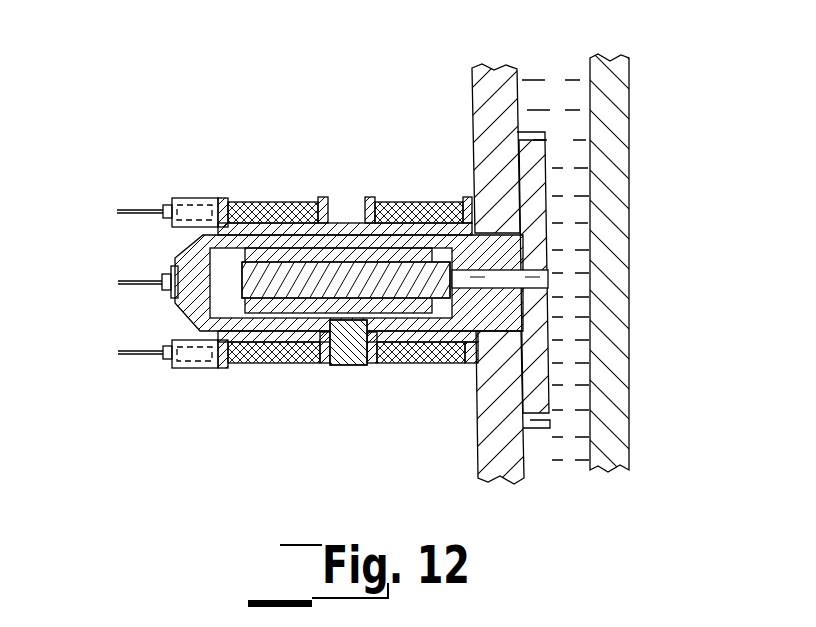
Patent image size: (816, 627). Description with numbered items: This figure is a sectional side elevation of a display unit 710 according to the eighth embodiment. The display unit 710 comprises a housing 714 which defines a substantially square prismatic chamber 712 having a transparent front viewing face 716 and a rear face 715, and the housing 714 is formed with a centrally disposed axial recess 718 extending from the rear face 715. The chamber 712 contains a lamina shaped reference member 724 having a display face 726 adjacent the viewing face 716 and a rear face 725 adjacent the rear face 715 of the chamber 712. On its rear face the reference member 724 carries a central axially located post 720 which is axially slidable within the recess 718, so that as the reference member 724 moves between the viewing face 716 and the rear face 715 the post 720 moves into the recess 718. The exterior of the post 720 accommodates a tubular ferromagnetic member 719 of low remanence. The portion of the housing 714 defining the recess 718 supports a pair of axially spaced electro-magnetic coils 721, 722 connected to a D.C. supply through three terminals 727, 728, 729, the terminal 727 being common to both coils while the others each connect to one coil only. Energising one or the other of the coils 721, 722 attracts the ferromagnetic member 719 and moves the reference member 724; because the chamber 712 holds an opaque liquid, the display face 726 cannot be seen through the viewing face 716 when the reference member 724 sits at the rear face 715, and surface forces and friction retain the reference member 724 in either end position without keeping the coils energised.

The display unit 710 is at (645, 64).
The chamber 712 is at (577, 157).
The housing 714 is at (473, 112).
The rear face 715 is at (482, 162).
The transparent front viewing face 716 is at (618, 244).
The axial recess 718 is at (220, 292).
The tubular ferromagnetic member 719 is at (277, 310).
The post 720 is at (345, 288).
The electro-magnetic coil 721 is at (282, 200).
The electro-magnetic coil 722 is at (378, 200).
The reference member 724 is at (543, 308).
The rear face 725 is at (530, 365).
The display face 726 is at (553, 387).
The terminal 727 is at (122, 280).
The terminal 728 is at (128, 208).
The terminal 729 is at (131, 356).